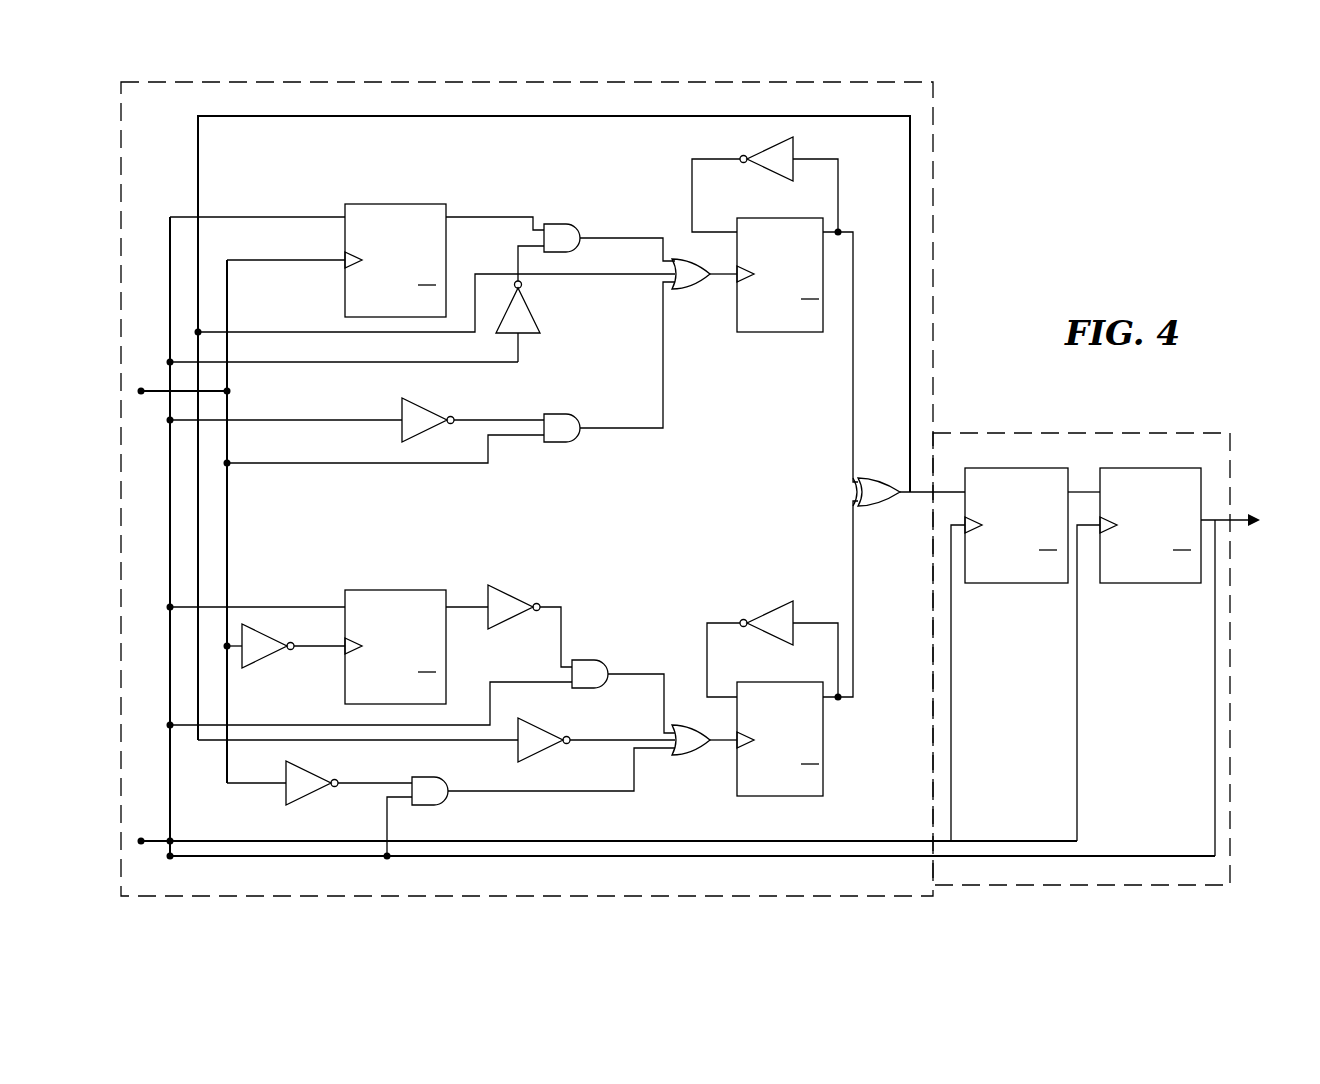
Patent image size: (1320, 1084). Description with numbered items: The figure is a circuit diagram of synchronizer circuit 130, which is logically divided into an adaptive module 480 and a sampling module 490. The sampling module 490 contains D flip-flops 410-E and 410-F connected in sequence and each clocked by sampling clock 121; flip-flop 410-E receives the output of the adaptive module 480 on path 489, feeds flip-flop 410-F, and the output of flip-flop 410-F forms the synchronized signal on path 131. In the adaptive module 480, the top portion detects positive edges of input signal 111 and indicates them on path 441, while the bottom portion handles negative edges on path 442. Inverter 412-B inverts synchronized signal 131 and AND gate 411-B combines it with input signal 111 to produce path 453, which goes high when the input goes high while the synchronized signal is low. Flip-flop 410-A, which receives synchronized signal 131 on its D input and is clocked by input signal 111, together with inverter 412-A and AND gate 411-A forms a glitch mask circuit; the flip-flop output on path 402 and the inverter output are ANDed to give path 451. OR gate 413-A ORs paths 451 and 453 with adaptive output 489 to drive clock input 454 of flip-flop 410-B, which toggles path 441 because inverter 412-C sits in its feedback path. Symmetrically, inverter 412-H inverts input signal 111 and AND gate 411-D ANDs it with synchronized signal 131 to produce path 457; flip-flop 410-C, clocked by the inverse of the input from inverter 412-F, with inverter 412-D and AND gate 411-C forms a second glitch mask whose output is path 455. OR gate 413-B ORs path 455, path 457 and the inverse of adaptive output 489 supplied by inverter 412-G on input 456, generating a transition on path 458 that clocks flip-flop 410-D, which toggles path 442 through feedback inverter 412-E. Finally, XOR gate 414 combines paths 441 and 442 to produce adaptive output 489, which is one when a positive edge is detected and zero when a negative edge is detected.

The synchronizer circuit 130 is at (973, 148).
The synchronized signal path 131 is at (1238, 523).
The input signal 111 is at (137, 395).
The sampling clock 121 is at (145, 838).
The adaptive module 480 is at (545, 110).
The sampling module 490 is at (1102, 458).
The output path of flip-flop 410-A 402 is at (459, 212).
The D flip-flop 410-A is at (417, 266).
The D flip-flop 410-B is at (803, 281).
The D flip-flop 410-C is at (417, 653).
The D flip-flop 410-D is at (803, 747).
The D flip-flop 410-E is at (1037, 531).
The D flip-flop 410-F is at (1172, 531).
The AND gate 411-A is at (553, 224).
The AND gate 411-B is at (552, 413).
The AND gate 411-C is at (583, 659).
The AND gate 411-D is at (428, 806).
The inverter 412-A is at (527, 303).
The inverter 412-B is at (424, 400).
The inverter 412-C is at (784, 143).
The inverter 412-D is at (500, 590).
The inverter 412-E is at (784, 606).
The inverter 412-F is at (256, 661).
The inverter 412-G is at (532, 722).
The inverter 412-H is at (300, 800).
The OR gate 413-A is at (693, 290).
The OR gate 413-B is at (684, 757).
The XOR gate 414 is at (882, 508).
The positive-edge indication path 441 is at (853, 308).
The negative-edge indication path 442 is at (853, 592).
The output path of AND gate 411-A 451 is at (635, 237).
The output path of AND gate 411-B 453 is at (643, 428).
The clock input path of flip-flop 410-B 454 is at (719, 280).
The output path of AND gate 411-C 455 is at (647, 674).
The input path of OR gate 413-B 456 is at (595, 740).
The output path of AND gate 411-D 457 is at (600, 791).
The clock input path of flip-flop 410-D 458 is at (717, 742).
The adaptive output path 489 is at (641, 277).